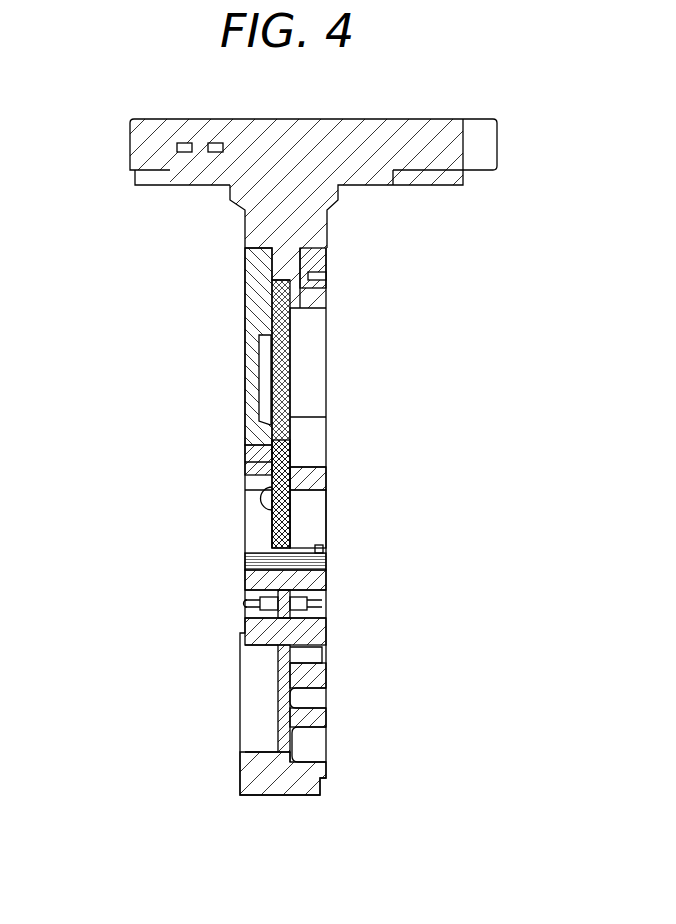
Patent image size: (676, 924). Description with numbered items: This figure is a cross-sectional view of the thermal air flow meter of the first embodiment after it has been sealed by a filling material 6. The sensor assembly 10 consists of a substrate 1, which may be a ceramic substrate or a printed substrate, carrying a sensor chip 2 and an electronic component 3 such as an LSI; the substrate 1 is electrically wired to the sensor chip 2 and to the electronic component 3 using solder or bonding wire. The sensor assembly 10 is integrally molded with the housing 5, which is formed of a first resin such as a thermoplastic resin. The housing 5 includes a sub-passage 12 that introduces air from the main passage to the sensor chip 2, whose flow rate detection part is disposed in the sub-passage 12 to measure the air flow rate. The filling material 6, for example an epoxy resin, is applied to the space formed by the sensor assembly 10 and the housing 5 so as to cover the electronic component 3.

The substrate 1 is at (280, 385).
The sensor chip 2 is at (277, 515).
The electronic component 3 is at (262, 388).
The housing 5 is at (260, 218).
The filling material 6 is at (250, 318).
The sensor assembly 10 is at (283, 457).
The sub-passage 12 is at (303, 520).